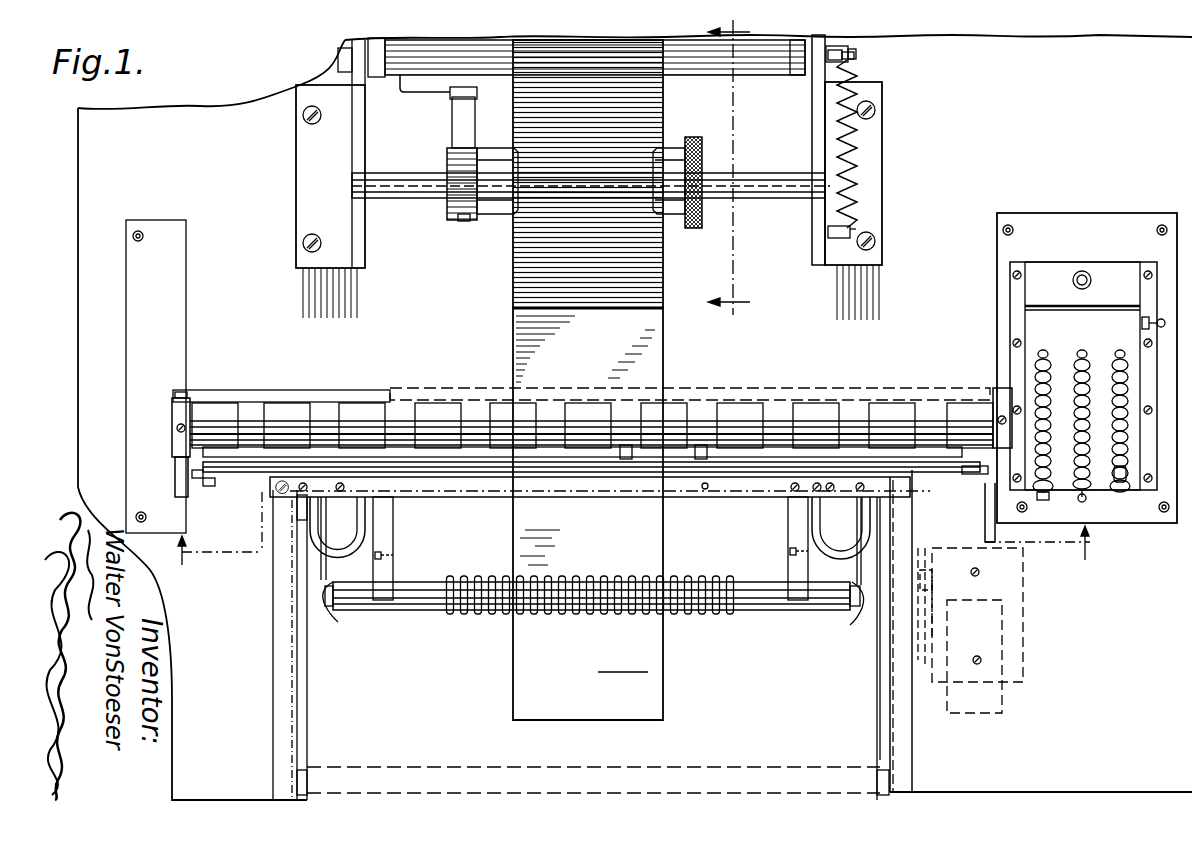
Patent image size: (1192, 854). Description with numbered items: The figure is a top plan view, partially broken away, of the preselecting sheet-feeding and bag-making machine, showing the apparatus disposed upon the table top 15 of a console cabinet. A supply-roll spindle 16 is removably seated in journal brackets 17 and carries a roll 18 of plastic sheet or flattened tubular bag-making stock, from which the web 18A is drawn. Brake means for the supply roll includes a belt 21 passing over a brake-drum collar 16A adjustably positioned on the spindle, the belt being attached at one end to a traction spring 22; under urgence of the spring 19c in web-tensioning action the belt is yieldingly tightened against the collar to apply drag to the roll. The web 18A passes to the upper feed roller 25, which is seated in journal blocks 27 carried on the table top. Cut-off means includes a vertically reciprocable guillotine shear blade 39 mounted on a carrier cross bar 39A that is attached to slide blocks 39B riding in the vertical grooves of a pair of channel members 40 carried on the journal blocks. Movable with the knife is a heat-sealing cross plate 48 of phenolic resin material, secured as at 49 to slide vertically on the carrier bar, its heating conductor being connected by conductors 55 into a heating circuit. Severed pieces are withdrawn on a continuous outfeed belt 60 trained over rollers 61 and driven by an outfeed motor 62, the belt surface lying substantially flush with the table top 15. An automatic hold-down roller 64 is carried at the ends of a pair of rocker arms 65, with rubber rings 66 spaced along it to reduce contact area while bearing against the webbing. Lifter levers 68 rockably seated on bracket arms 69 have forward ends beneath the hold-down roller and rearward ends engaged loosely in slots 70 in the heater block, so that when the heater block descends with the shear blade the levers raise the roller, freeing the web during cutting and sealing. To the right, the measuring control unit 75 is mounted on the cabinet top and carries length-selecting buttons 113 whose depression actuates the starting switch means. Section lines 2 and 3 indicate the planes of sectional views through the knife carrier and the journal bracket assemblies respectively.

The section line 2- 2 is at (633, 557).
The section line 3- 3 is at (738, 168).
The table top 15 is at (242, 678).
The supply-roll spindle 16 is at (745, 175).
The brake-drum collar 16A is at (444, 166).
The journal brackets 17 is at (358, 262).
The roll 18 is at (520, 285).
The web 18A is at (645, 545).
The spring 19c is at (850, 165).
The belt 21 is at (452, 117).
The traction spring 22 is at (465, 228).
The upper feed roller 25 is at (362, 408).
The journal blocks 27 is at (172, 430).
The guillotine shear blade 39 is at (231, 460).
The carrier cross bar 39A is at (258, 505).
The slide blocks 39B is at (205, 490).
The channel members 40 is at (190, 497).
The cross plate 48 is at (578, 478).
The securing means 49 is at (445, 500).
The conductors 55 is at (348, 530).
The outfeed belt 60 is at (440, 692).
The rollers 61 is at (297, 535).
The outfeed motor 62 is at (1010, 640).
The hold-down roller 64 is at (775, 600).
The rocker arms 65 is at (593, 613).
The rubber rings 66 is at (535, 615).
The lifter levers 68 is at (392, 533).
The bracket arms 69 is at (400, 560).
The slots 70 is at (385, 500).
The measuring control unit 75 is at (1092, 208).
The length-selecting button 113 is at (1097, 362).